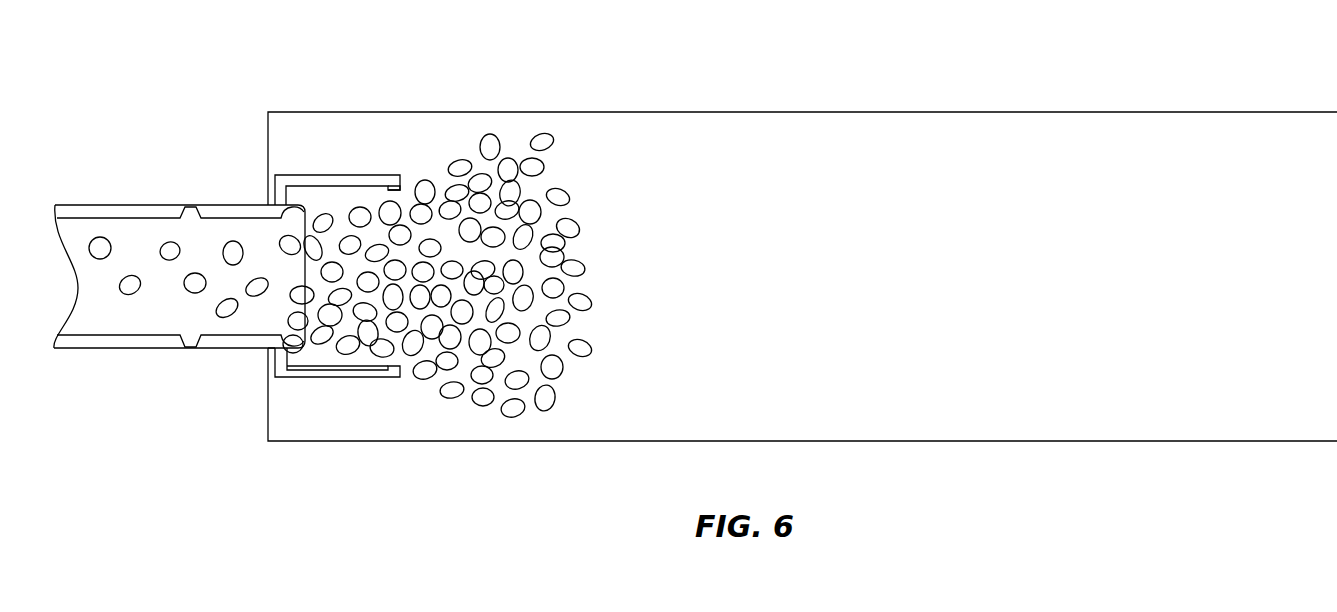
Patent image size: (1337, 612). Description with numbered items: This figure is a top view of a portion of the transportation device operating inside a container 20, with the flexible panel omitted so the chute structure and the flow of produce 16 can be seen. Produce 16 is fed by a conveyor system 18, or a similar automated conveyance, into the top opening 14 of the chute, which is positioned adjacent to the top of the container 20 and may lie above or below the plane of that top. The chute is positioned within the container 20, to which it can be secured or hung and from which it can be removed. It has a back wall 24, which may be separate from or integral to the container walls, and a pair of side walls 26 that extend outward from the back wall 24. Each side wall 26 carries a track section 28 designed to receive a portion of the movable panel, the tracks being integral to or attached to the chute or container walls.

The top opening 14 is at (377, 378).
The produce 16 is at (508, 163).
The conveyor system 18 is at (255, 232).
The container 20 is at (370, 112).
The back wall 24 is at (270, 352).
The side walls 26 is at (331, 177).
The track section 28 is at (402, 192).